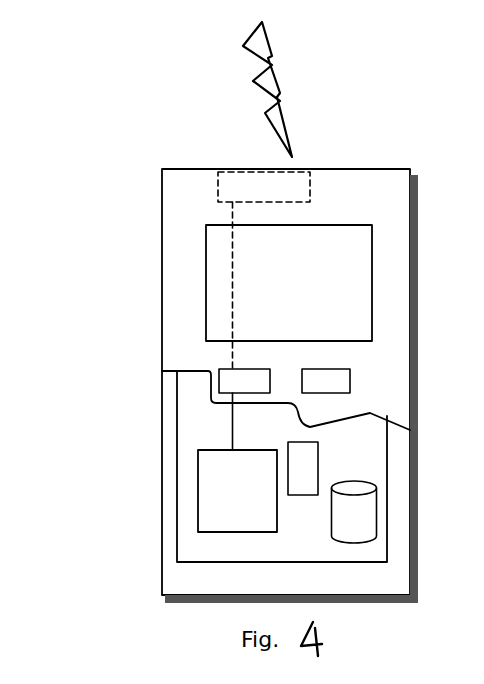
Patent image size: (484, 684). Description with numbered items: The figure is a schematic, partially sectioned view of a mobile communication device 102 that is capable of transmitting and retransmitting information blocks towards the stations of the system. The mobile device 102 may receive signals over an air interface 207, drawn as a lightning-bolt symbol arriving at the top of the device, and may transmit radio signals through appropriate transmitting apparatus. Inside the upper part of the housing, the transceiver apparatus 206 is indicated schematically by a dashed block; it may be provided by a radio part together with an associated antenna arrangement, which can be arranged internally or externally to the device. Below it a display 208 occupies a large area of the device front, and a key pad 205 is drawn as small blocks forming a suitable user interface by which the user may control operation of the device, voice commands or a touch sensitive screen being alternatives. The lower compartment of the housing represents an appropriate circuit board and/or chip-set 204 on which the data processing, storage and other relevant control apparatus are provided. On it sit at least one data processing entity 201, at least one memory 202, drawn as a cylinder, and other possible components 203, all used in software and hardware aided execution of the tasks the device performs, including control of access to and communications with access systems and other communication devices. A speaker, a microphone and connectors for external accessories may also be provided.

The communication device 102 is at (163, 205).
The data processing entity 201 is at (205, 477).
The memory 202 is at (348, 523).
The other possible components 203 is at (303, 455).
The circuit board 204 is at (198, 548).
The key pad 205 is at (223, 385).
The transceiver apparatus 206 is at (302, 184).
The air interface 207 is at (292, 114).
The display 208 is at (220, 272).